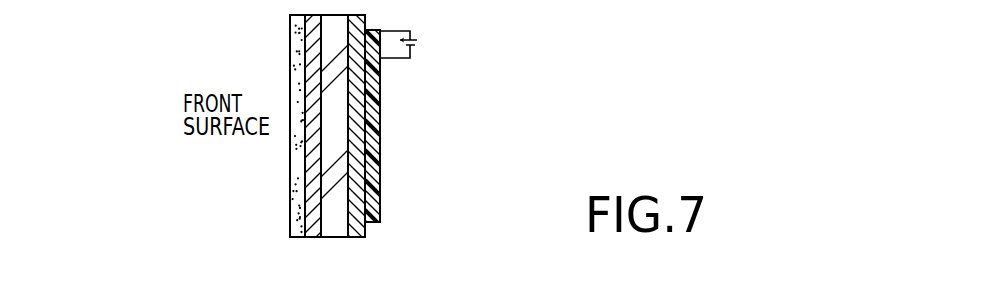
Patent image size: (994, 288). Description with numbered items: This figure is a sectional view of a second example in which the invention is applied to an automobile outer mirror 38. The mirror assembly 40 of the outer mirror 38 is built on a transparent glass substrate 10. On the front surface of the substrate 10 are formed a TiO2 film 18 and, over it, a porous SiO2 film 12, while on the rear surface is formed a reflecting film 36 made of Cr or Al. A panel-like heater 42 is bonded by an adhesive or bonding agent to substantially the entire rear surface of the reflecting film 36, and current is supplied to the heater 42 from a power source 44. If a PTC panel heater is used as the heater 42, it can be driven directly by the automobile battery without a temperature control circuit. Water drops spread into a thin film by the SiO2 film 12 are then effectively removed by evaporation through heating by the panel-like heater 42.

The transparent glass substrate 10 is at (337, 229).
The porous SiO2 film 12 is at (295, 239).
The TiO2 film 18 is at (315, 229).
The reflecting film 36 is at (361, 229).
The automobile outer mirror 38 is at (530, 62).
The mirror assembly 40 is at (458, 177).
The panel-like heater 42 is at (373, 120).
The power source 44 is at (413, 51).